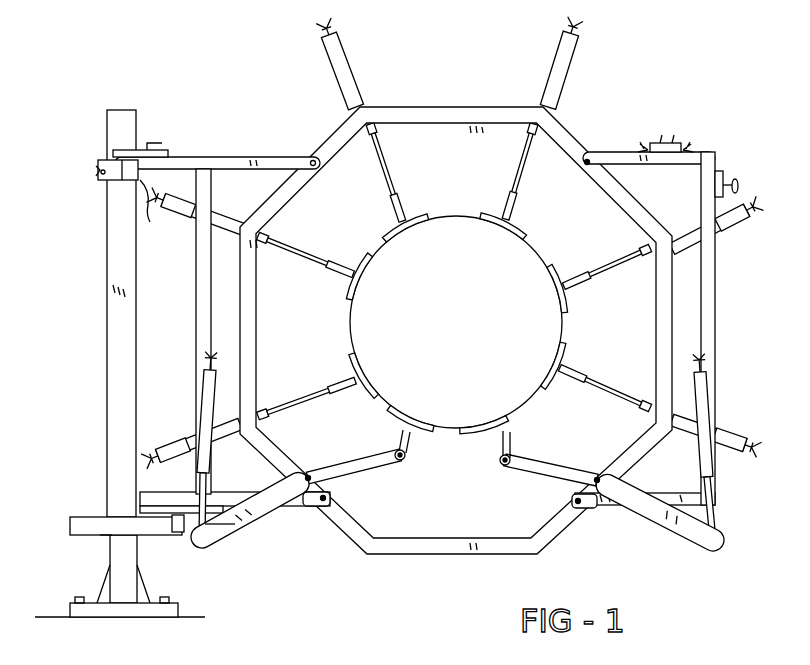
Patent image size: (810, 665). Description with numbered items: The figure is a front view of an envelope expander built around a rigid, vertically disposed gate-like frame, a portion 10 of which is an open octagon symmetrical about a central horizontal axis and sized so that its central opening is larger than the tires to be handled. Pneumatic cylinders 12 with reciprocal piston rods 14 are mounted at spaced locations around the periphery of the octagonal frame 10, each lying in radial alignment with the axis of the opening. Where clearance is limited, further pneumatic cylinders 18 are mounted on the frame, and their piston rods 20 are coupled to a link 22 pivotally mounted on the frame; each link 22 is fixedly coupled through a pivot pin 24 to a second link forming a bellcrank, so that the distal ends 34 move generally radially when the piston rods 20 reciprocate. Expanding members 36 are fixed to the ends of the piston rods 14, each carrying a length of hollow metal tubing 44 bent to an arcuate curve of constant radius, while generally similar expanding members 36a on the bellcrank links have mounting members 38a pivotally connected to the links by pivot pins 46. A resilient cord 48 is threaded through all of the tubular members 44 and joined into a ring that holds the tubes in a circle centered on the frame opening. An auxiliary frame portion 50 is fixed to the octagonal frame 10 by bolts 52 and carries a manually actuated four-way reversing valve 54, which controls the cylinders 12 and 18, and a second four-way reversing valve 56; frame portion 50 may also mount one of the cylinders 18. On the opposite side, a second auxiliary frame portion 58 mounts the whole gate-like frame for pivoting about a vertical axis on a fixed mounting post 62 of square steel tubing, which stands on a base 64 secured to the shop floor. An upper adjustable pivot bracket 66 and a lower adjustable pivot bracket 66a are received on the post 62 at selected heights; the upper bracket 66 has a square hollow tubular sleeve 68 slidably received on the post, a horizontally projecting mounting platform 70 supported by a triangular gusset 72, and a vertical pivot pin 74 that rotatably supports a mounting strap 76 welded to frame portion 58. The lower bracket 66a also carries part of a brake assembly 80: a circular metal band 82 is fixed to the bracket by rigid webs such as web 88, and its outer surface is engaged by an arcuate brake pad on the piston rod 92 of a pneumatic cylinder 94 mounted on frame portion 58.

The octagonal frame portion 10 is at (478, 70).
The pneumatic cylinders 12 is at (345, 78).
The piston rods 14 is at (388, 170).
The pneumatic cylinders 18 is at (207, 420).
The piston rods 20 is at (195, 494).
The link 22 is at (262, 510).
The pivot pin 24 is at (309, 475).
The distal ends 34 is at (352, 463).
The expanding members 36 is at (430, 204).
The expanding members 36a is at (410, 458).
The mounting members 38a is at (400, 446).
The hollow metal tubing 44 is at (365, 284).
The pivot pins 46 is at (401, 463).
The resilient cord 48 is at (452, 220).
The auxiliary frame portion 50 is at (716, 306).
The bolts 52 is at (587, 166).
The four-way reversing valve 54 is at (678, 145).
The second four-way reversing valve 56 is at (721, 172).
The second auxiliary frame portion 58 is at (237, 157).
The mounting post 62 is at (108, 360).
The base 64 is at (90, 618).
The upper adjustable pivot bracket 66 is at (100, 173).
The lower adjustable pivot bracket 66a is at (103, 540).
The square hollow tubular sleeve 68 is at (150, 225).
The mounting platform 70 is at (100, 167).
The triangular gusset 72 is at (120, 206).
The pivot pin 74 is at (120, 150).
The mounting strap 76 is at (148, 148).
The brake assembly 80 is at (150, 535).
The circular metal band 82 is at (93, 517).
The rigid web 88 is at (360, 656).
The piston rod 92 is at (212, 500).
The pneumatic cylinder 94 is at (236, 536).